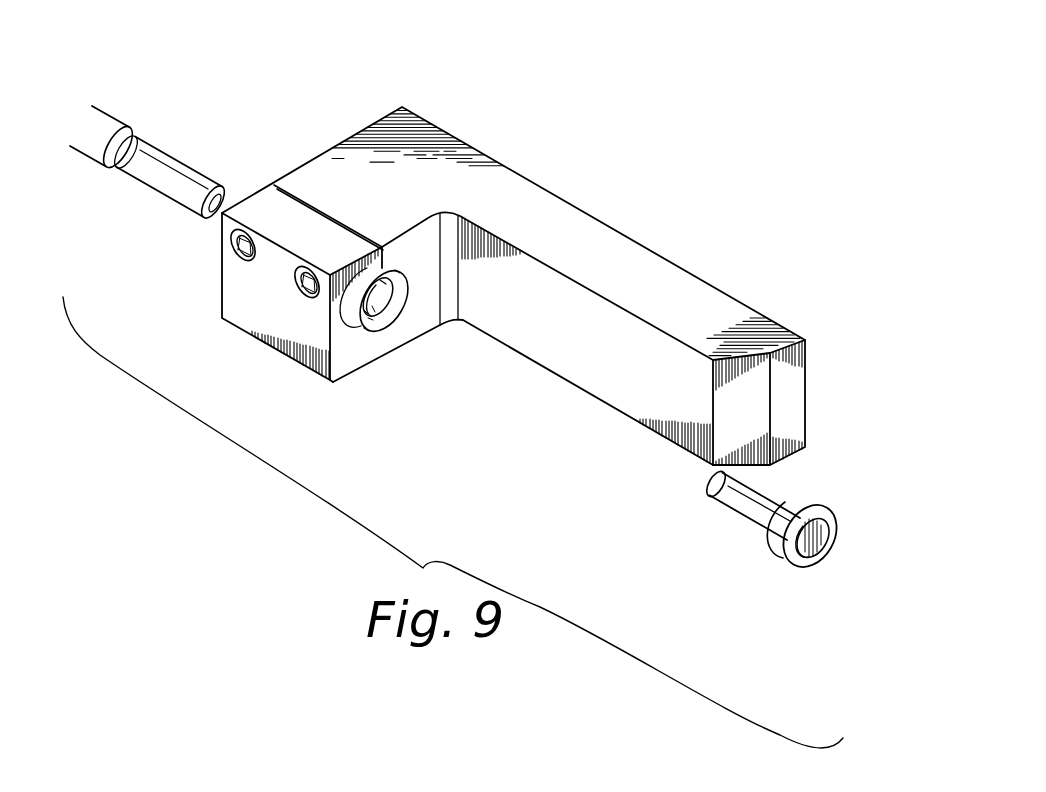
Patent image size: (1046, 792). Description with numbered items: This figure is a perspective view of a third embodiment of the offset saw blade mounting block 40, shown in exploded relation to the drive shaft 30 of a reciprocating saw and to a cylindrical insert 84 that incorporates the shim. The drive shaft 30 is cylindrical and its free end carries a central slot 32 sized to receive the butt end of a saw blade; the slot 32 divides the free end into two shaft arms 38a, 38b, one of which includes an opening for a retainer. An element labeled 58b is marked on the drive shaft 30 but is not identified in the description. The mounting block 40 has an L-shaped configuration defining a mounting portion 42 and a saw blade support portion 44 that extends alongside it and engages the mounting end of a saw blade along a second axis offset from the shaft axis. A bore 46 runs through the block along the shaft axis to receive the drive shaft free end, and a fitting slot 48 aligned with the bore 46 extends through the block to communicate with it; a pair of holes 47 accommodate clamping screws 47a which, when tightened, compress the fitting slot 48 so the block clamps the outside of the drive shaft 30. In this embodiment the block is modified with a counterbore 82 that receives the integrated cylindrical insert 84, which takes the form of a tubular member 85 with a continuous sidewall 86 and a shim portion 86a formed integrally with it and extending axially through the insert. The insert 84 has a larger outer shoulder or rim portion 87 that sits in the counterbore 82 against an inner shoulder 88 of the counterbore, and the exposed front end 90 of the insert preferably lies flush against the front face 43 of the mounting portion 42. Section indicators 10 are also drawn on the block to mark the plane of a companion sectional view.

The section line 10 is at (271, 158).
The drive shaft 30 is at (116, 120).
The central slot 32 is at (173, 166).
The shaft arm 38a is at (232, 203).
The shaft arm 38b is at (207, 208).
The mounting block 40 is at (410, 158).
The mounting portion 42 is at (268, 340).
The front face 43 is at (340, 330).
The saw blade support portion 44 is at (637, 258).
The bore 46 is at (362, 333).
The holes 47 is at (228, 246).
The clamping screws 47a is at (295, 285).
The fitting slot 48 is at (313, 203).
The pin surface 58b is at (157, 180).
The counterbore 82 is at (392, 305).
The cylindrical insert 84 is at (750, 510).
The tubular member 85 is at (775, 512).
The continuous sidewall 86 is at (824, 548).
The shim portion 86a is at (815, 563).
The rim portion 87 is at (833, 517).
The inner shoulder 88 is at (382, 318).
The front end 90 is at (800, 565).